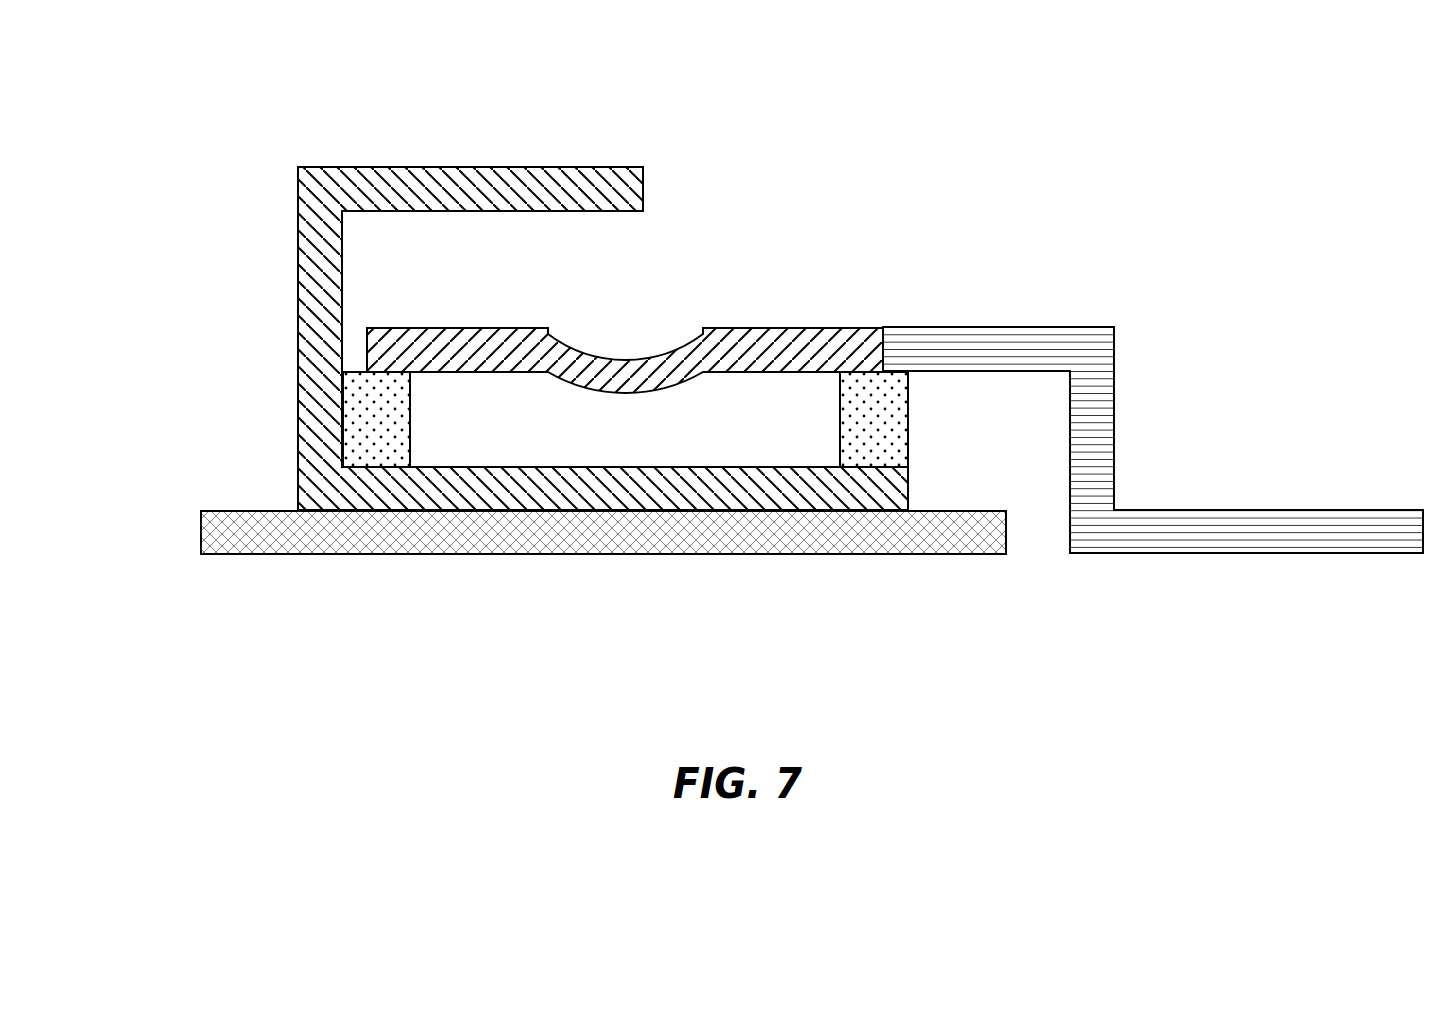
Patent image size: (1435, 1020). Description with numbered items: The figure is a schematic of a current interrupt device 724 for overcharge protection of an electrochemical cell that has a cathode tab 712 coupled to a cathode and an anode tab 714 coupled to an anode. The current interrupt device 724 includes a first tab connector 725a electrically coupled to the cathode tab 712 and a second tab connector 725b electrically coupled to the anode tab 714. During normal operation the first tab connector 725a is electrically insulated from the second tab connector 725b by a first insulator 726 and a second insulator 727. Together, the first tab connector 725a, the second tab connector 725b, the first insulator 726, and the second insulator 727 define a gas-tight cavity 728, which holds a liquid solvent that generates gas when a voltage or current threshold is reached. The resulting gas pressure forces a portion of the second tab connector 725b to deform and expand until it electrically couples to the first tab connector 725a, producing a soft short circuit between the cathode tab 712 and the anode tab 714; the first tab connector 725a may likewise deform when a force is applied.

The cathode tab 712 is at (200, 530).
The anode tab 714 is at (1114, 361).
The current interrupt device 724 is at (781, 126).
The first tab connector 725a is at (355, 167).
The second tab connector 725b is at (793, 327).
The first insulator 726 is at (402, 455).
The second insulator 727 is at (900, 455).
The gas-tight cavity 728 is at (545, 445).